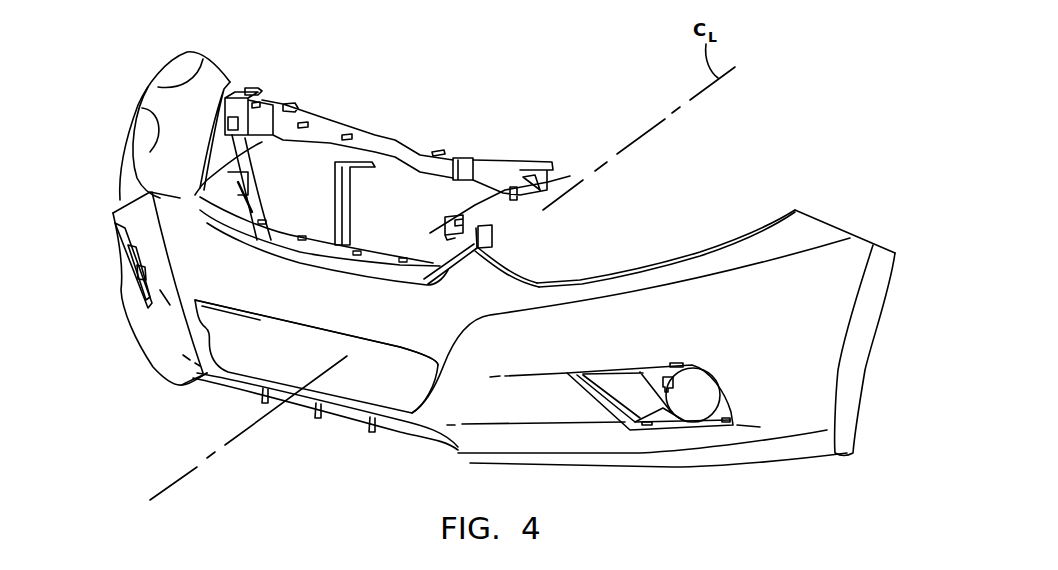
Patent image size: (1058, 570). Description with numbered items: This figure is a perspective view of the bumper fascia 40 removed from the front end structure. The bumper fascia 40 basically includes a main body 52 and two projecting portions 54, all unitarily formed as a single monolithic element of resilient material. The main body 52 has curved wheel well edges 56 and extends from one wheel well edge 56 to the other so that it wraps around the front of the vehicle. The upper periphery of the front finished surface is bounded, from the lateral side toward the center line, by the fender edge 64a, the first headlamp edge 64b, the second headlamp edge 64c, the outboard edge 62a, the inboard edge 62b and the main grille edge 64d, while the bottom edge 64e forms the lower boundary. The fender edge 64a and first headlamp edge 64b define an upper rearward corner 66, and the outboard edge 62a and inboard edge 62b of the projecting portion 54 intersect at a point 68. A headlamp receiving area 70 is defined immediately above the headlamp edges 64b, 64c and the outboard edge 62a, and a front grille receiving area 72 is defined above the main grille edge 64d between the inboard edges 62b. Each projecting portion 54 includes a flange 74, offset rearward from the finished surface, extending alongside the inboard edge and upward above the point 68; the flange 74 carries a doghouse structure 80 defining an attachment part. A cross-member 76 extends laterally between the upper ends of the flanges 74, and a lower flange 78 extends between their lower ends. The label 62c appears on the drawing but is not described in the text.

The bumper fascia 40 is at (467, 86).
The main body 52 is at (263, 293).
The projecting portion 54 is at (190, 190).
The wheel well edge 56 is at (268, 107).
The outboard edge 62a is at (520, 270).
The inboard edge 62b is at (250, 186).
The attachment flange 62c is at (139, 169).
The fender edge 64a is at (217, 75).
The first headlamp edge 64b is at (150, 92).
The second headlamp edge 64c is at (673, 259).
The main grille edge 64d is at (280, 265).
The bottom edge 64e is at (458, 449).
The upper rearward corner 66 is at (795, 209).
The point 68 is at (246, 154).
The headlamp receiving area 70 is at (208, 75).
The front grille receiving area 72 is at (371, 258).
The flange 74 is at (475, 212).
The cross-member 76 is at (370, 132).
The lower flange 78 is at (382, 260).
The doghouse structure 80 is at (489, 233).